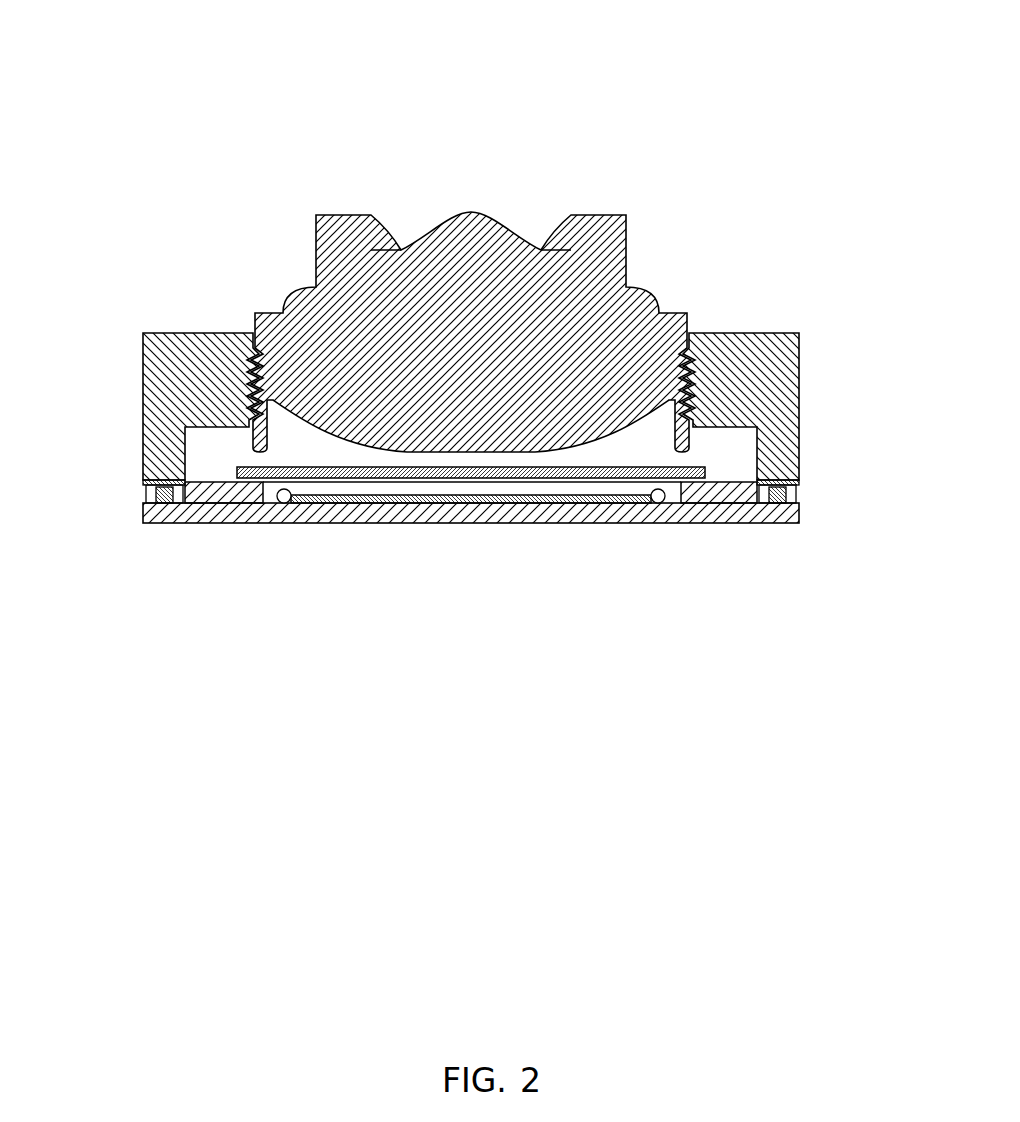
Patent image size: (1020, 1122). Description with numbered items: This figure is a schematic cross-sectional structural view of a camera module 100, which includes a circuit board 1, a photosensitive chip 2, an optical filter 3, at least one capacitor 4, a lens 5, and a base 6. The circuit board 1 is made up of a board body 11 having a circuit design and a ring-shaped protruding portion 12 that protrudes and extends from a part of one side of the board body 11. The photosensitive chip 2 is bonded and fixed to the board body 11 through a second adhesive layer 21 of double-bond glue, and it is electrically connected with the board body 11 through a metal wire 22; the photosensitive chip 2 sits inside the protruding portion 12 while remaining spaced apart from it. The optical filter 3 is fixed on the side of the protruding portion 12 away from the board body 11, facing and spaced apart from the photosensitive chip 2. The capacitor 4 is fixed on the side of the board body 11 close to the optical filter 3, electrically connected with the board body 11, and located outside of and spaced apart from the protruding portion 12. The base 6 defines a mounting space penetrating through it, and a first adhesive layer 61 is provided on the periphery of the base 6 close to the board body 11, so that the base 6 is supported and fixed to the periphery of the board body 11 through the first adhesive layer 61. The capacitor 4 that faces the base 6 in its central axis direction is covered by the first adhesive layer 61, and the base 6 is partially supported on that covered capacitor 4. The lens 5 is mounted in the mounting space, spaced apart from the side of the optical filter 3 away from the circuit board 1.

The camera module 100 is at (500, 51).
The circuit board 1 is at (471, 579).
The board body 11 is at (299, 505).
The protruding portion 12 is at (223, 493).
The photosensitive chip 2 is at (452, 507).
The second adhesive layer 21 is at (541, 503).
The metal wire 22 is at (655, 505).
The optical filter 3 is at (240, 468).
The capacitor 4 is at (800, 498).
The lens 5 is at (333, 312).
The base 6 is at (770, 395).
The first adhesive layer 61 is at (802, 482).